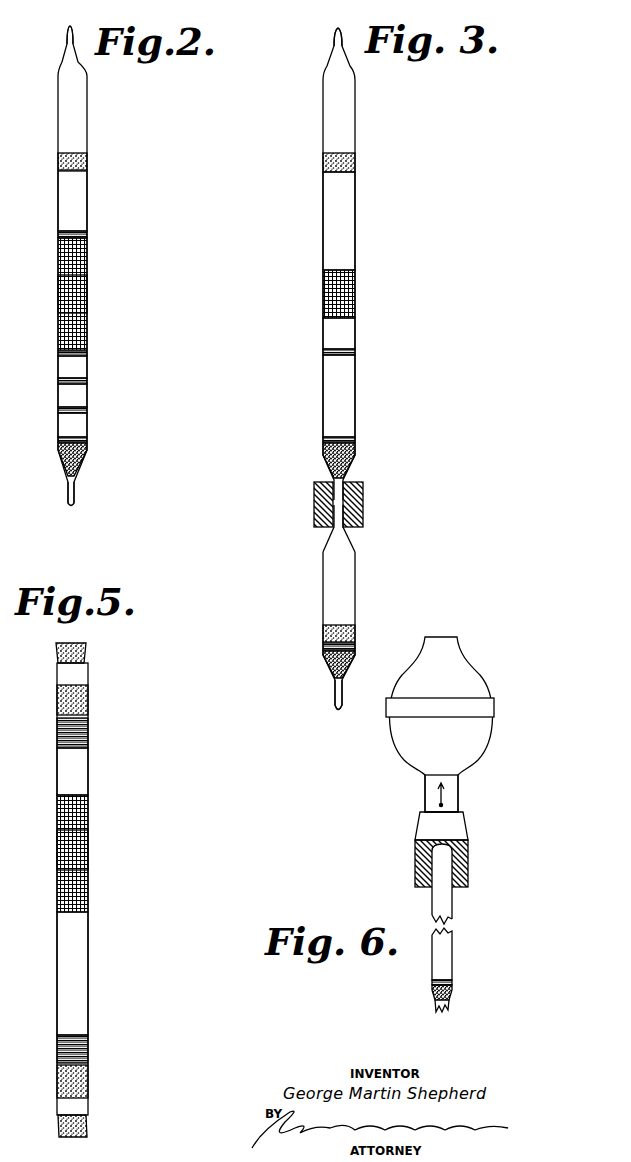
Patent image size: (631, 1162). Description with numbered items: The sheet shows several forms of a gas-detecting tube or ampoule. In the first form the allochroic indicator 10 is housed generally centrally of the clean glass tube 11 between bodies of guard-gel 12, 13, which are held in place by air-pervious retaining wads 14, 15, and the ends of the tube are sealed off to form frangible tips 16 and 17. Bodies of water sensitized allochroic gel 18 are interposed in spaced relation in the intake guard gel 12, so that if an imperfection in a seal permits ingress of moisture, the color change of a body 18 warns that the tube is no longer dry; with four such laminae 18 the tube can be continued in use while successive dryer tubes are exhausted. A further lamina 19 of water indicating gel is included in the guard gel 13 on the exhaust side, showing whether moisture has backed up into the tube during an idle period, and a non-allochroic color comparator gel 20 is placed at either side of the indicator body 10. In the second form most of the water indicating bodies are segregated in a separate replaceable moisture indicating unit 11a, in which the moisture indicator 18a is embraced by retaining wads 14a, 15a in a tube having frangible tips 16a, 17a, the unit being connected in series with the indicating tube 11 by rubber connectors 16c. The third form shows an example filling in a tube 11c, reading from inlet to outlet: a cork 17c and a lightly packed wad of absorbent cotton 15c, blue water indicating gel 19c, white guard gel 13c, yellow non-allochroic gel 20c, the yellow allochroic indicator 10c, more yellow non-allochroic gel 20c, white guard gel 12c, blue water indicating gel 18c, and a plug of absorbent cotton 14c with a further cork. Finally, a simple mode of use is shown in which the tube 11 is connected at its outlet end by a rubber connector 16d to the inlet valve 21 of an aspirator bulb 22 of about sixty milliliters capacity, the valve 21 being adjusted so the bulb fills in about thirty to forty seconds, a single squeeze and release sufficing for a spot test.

In FIG. 2, the allochroic indicator 10 is at (60, 300).
In FIG. 3, the allochroic indicator 10 is at (328, 296).
In FIG. 2, the glass tube 11 is at (65, 112).
In FIG. 3, the glass tube 11 is at (332, 112).
In FIG. 6, the glass tube 11 is at (448, 899).
In FIG. 2, the guard-gel 12 is at (65, 368).
In FIG. 3, the guard-gel 12 is at (332, 336).
In FIG. 6, the guard-gel 12 is at (445, 958).
In FIG. 2, the guard-gel 13 is at (65, 199).
In FIG. 3, the guard-gel 13 is at (330, 218).
In FIG. 2, the retaining wad 14 is at (60, 455).
In FIG. 3, the retaining wad 14 is at (328, 458).
In FIG. 6, the retaining wad 14 is at (452, 1000).
In FIG. 2, the retaining wad 15 is at (58, 161).
In FIG. 3, the retaining wad 15 is at (323, 160).
In FIG. 2, the frangible tip 16 is at (68, 495).
In FIG. 2, the frangible tip 17 is at (68, 43).
In FIG. 3, the frangible tip 17 is at (337, 45).
In FIG. 2, the water sensitized allochroic gel 18 is at (58, 354).
In FIG. 3, the water sensitized allochroic gel 18 is at (323, 352).
In FIG. 6, the water sensitized allochroic gel 18 is at (452, 983).
In FIG. 2, the lamina of water indicating gel 19 is at (58, 236).
In FIG. 2, the non-allochroic color comparator gel 20 is at (60, 258).
In FIG. 6, the inlet valve 21 is at (455, 796).
In FIG. 6, the aspirator bulb 22 is at (480, 678).
In FIG. 3, the frangible tip 16a is at (337, 697).
In FIG. 3, the rubber connector 16c is at (314, 485).
In FIG. 5, the rubber connector 16c is at (60, 1130).
In FIG. 6, the rubber connector 16d is at (462, 833).
In FIG. 3, the frangible tip 17a is at (336, 532).
In FIG. 3, the moisture indicating unit 11a is at (332, 586).
In FIG. 3, the retaining wad 15a is at (323, 633).
In FIG. 3, the moisture indicator 18a is at (323, 648).
In FIG. 3, the retaining wad 14a is at (330, 663).
In FIG. 5, the cork 17c is at (57, 655).
In FIG. 5, the tube 11c is at (60, 685).
In FIG. 5, the cotton wad 15c is at (60, 707).
In FIG. 5, the water indicating gel 19c is at (60, 735).
In FIG. 5, the guard gel 13c is at (60, 771).
In FIG. 5, the non-allochroic comparator gel 20c is at (60, 815).
In FIG. 5, the allochroic indicator 10c is at (60, 855).
In FIG. 5, the guard gel 12c is at (60, 970).
In FIG. 5, the water indicating gel 18c is at (60, 1053).
In FIG. 5, the cotton wad 14c is at (60, 1087).